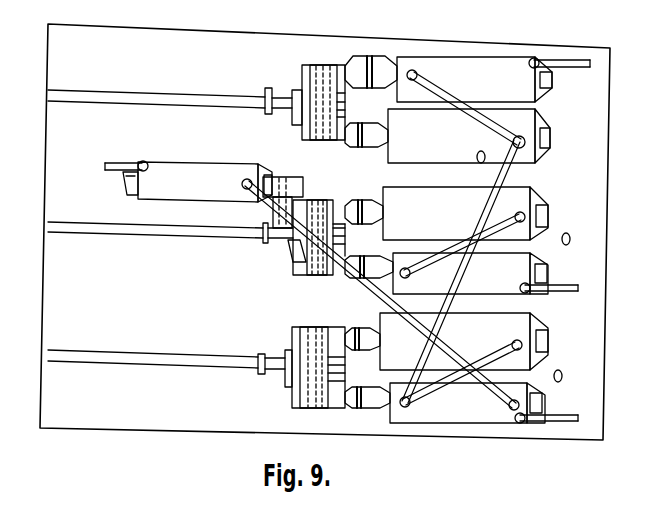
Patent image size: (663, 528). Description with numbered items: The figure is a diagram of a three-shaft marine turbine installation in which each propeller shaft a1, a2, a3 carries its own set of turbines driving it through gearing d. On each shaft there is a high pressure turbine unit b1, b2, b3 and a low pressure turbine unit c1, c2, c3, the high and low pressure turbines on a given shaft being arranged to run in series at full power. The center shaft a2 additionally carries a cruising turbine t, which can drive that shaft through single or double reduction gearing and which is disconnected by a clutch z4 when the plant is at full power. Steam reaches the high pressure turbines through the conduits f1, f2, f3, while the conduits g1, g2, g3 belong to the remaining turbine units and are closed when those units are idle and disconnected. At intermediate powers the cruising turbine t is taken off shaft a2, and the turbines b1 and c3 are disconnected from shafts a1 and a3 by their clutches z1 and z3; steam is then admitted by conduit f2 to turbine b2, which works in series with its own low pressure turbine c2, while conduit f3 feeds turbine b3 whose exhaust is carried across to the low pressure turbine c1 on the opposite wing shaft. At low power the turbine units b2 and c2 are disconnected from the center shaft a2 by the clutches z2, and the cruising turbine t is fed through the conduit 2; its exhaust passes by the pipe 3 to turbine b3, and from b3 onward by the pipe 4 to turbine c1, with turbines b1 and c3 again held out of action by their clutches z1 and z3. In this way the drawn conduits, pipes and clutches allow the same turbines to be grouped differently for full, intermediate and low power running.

The shaft a1 is at (77, 97).
The center shaft a2 is at (66, 230).
The shaft a3 is at (62, 358).
The high pressure turbine unit b1 is at (474, 79).
The high pressure turbine unit b2 is at (470, 273).
The high pressure turbine unit b3 is at (467, 403).
The low pressure turbine unit c1 is at (469, 136).
The low pressure turbine unit c2 is at (465, 213).
The low pressure turbine unit c3 is at (464, 341).
The gearing d is at (323, 200).
The steam conduit f1 is at (582, 68).
The steam conduit f2 is at (570, 292).
The steam conduit f3 is at (560, 415).
The steam conduit g1 is at (505, 138).
The steam conduit g2 is at (526, 217).
The steam conduit g3 is at (523, 348).
The cruising turbine t is at (197, 182).
The clutch z1 is at (373, 64).
The clutches z2 is at (354, 260).
The clutch z3 is at (348, 338).
The clutch z4 is at (300, 210).
The conduit 2 is at (121, 166).
The pipe 3 is at (290, 243).
The pipe 4 is at (510, 178).